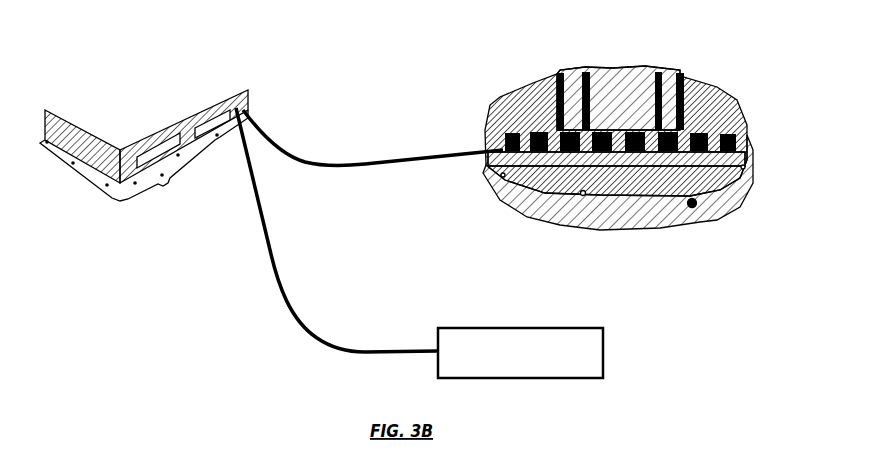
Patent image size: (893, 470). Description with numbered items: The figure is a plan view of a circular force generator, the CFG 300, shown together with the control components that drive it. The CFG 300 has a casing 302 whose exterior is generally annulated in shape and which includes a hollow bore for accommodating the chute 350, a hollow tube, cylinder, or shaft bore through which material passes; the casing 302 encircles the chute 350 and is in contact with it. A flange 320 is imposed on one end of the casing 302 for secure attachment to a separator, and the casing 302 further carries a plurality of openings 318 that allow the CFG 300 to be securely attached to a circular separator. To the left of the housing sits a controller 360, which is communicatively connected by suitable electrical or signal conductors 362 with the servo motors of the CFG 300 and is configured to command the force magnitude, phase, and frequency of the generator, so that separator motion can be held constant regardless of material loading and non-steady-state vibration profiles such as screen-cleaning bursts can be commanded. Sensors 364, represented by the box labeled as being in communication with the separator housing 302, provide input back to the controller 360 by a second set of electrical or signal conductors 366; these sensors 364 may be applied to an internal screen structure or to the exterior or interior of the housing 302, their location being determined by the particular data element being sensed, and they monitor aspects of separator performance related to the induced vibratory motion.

The CFG 300 is at (638, 136).
The casing 302 is at (642, 142).
The openings 318 is at (583, 193).
The flange 320 is at (692, 205).
The chute 350 is at (662, 78).
The controller 360 is at (232, 77).
The electrical or signal conductors 362 is at (295, 145).
The sensors 364 is at (602, 353).
The electrical or signal conductors 366 is at (298, 310).